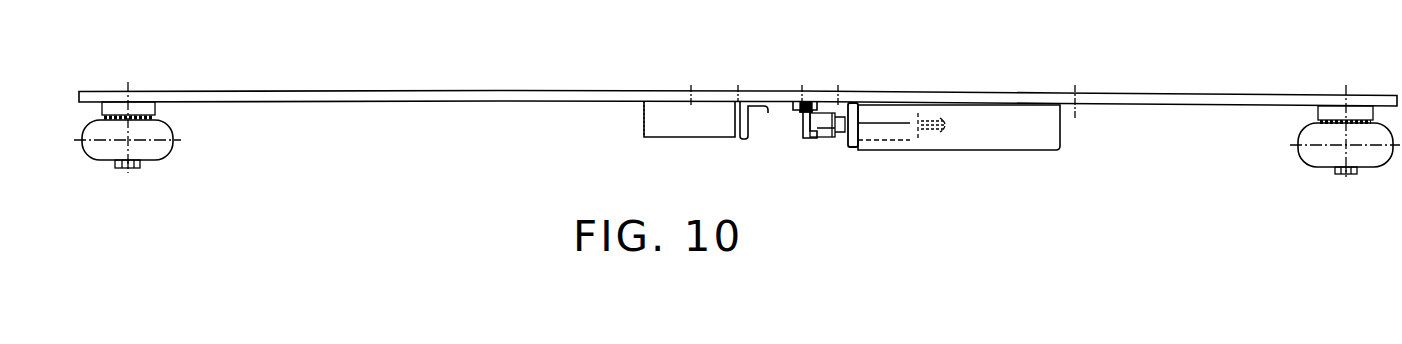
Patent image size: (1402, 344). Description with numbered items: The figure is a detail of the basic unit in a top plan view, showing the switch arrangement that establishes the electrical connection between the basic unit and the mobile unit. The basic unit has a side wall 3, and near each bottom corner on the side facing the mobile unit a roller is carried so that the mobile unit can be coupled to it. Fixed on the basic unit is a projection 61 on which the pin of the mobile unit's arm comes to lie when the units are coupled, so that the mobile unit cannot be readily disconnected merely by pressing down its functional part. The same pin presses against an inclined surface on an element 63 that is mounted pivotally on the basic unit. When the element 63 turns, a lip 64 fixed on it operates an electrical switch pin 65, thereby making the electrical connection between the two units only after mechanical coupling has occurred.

The side wall 3 is at (519, 102).
The projection 61 is at (717, 127).
The element 63 is at (752, 117).
The lip 64 is at (797, 140).
The electrical switch pin 65 is at (897, 135).